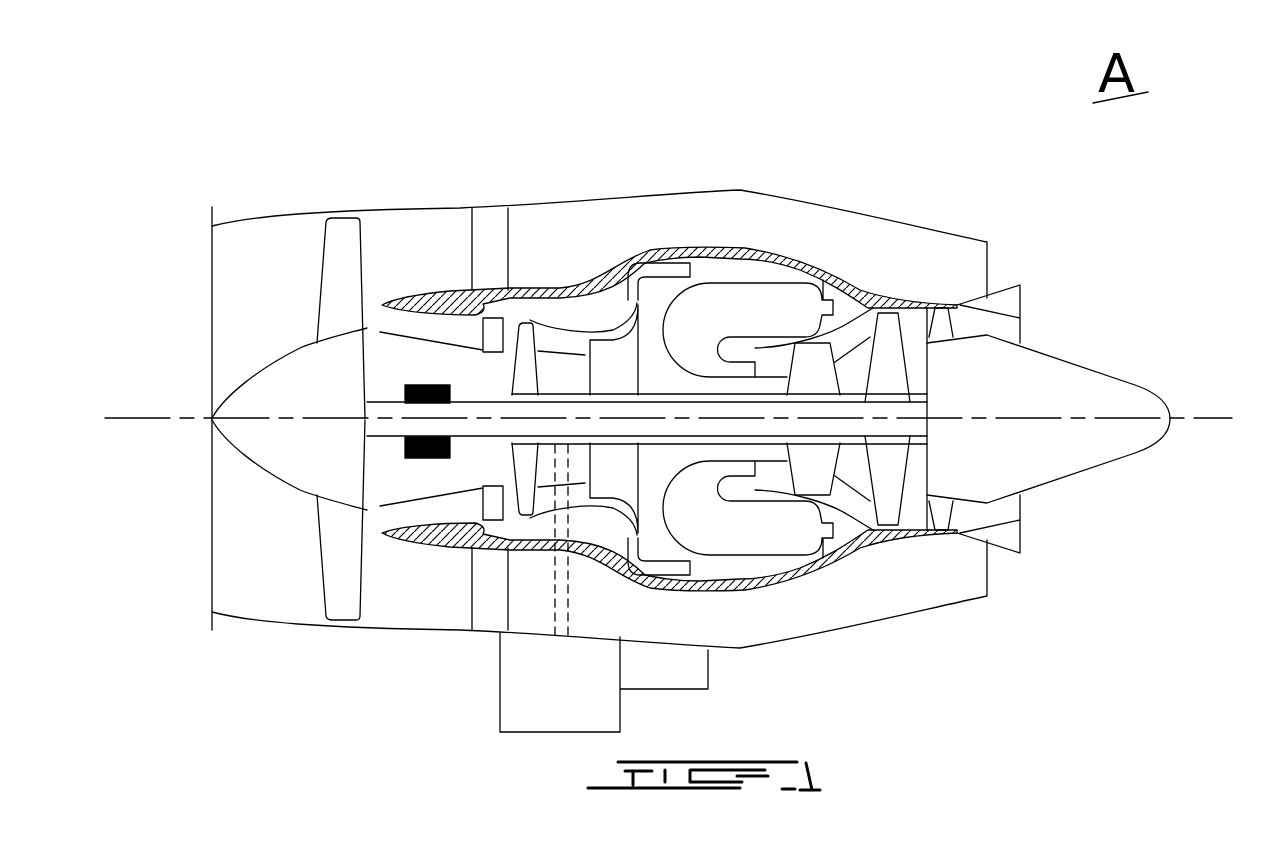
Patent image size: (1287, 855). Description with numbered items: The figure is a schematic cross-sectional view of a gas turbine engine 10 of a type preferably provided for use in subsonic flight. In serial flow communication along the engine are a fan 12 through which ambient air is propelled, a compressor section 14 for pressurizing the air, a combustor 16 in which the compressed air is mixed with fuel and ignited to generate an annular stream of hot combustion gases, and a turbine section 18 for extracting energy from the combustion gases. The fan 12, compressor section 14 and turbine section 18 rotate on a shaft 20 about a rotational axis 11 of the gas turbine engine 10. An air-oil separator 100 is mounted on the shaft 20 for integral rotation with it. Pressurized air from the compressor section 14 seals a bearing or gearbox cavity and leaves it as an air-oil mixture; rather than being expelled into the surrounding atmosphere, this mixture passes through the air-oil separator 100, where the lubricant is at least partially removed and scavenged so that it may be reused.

The gas turbine engine 10 is at (870, 148).
The rotational axis 11 is at (1200, 418).
The fan 12 is at (337, 550).
The compressor section 14 is at (553, 333).
The combustor 16 is at (740, 300).
The turbine section 18 is at (835, 478).
The shaft 20 is at (477, 437).
The air-oil separator 100 is at (422, 384).